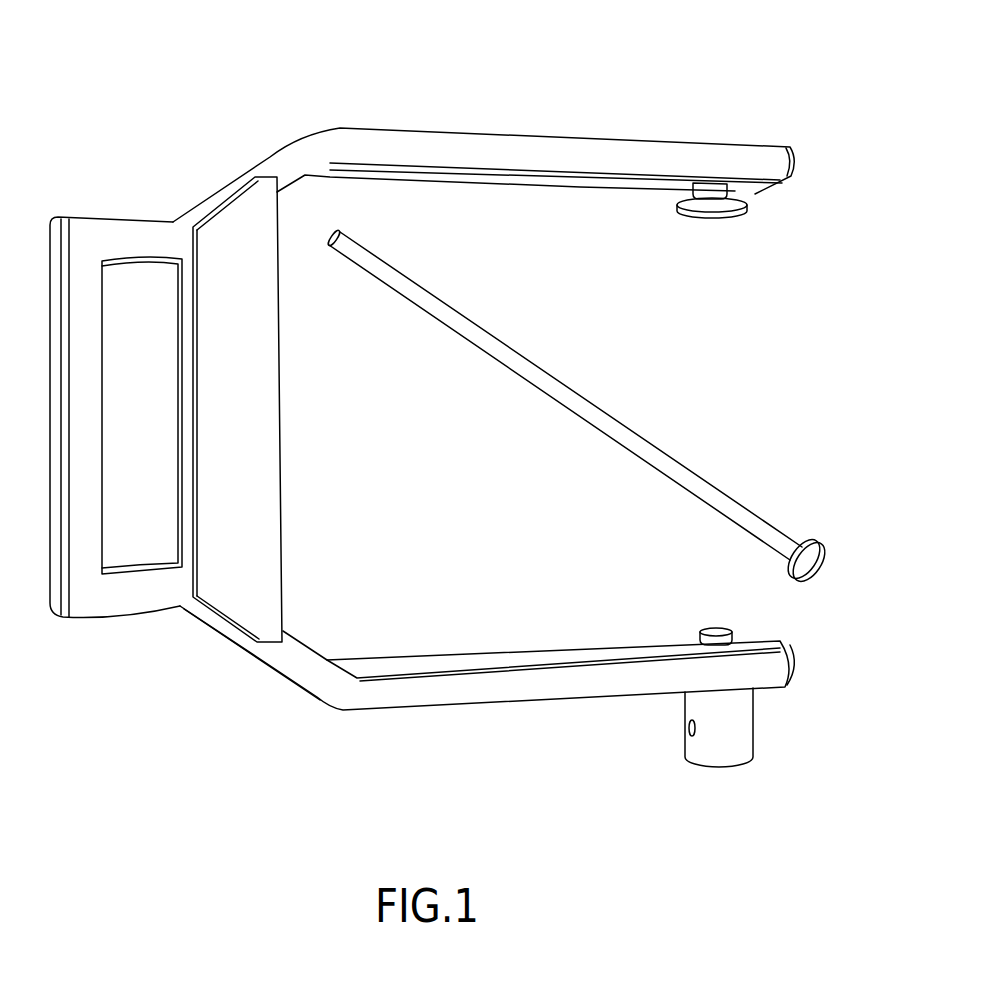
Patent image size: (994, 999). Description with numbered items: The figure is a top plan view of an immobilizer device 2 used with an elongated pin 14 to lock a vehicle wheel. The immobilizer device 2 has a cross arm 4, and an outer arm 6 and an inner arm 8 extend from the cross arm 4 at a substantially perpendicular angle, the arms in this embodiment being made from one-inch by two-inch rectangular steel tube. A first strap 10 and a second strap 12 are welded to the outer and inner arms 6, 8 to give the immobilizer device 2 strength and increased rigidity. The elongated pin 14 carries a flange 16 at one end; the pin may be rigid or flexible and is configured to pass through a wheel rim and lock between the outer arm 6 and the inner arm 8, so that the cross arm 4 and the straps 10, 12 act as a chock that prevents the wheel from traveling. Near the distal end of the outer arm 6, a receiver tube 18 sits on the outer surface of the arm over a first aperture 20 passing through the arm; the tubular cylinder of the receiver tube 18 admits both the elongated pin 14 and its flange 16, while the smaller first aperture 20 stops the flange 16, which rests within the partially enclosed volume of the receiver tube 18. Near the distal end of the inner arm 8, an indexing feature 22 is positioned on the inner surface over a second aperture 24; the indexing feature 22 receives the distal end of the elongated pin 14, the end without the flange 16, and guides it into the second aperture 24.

The immobilizer device 2 is at (733, 62).
The cross arm 4 is at (84, 257).
The outer arm 6 is at (525, 688).
The inner arm 8 is at (560, 152).
The first strap 10 is at (258, 447).
The second strap 12 is at (187, 407).
The elongated pin 14 is at (535, 361).
The flange 16 is at (812, 541).
The receiver tube 18 is at (738, 727).
The first aperture 20 is at (700, 635).
The indexing feature 22 is at (693, 196).
The second aperture 24 is at (712, 218).